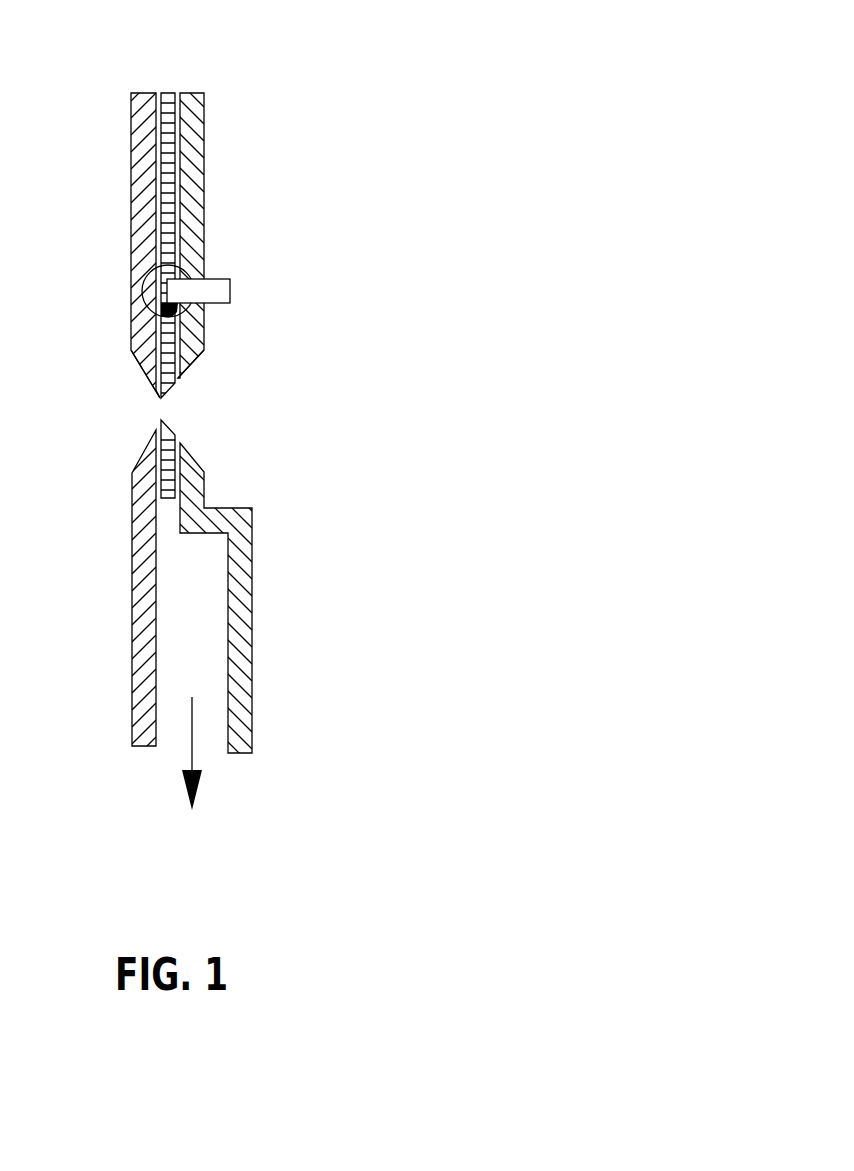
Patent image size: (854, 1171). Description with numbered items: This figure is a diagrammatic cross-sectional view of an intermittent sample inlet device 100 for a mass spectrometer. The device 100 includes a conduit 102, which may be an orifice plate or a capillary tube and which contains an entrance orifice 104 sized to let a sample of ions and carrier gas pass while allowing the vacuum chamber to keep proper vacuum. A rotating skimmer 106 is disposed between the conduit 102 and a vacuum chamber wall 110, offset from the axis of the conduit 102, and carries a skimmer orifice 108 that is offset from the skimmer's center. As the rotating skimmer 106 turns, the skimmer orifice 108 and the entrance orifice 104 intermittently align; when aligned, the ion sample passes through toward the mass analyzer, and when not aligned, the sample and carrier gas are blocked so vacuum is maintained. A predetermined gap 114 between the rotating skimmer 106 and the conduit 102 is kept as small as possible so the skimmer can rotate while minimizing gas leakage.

The intermittent sample inlet device 100 is at (448, 58).
The conduit 102 is at (146, 95).
The entrance orifice 104 is at (125, 406).
The rotating skimmer 106 is at (168, 95).
The skimmer orifice 108 is at (205, 406).
The vacuum chamber wall 110 is at (190, 95).
The predetermined gap 114 is at (178, 476).